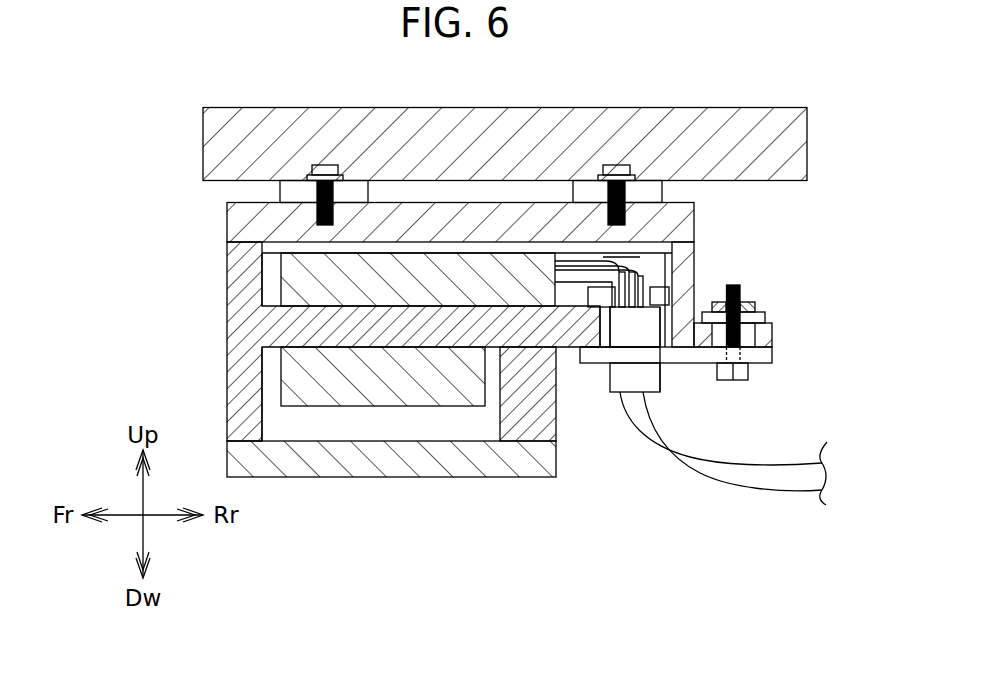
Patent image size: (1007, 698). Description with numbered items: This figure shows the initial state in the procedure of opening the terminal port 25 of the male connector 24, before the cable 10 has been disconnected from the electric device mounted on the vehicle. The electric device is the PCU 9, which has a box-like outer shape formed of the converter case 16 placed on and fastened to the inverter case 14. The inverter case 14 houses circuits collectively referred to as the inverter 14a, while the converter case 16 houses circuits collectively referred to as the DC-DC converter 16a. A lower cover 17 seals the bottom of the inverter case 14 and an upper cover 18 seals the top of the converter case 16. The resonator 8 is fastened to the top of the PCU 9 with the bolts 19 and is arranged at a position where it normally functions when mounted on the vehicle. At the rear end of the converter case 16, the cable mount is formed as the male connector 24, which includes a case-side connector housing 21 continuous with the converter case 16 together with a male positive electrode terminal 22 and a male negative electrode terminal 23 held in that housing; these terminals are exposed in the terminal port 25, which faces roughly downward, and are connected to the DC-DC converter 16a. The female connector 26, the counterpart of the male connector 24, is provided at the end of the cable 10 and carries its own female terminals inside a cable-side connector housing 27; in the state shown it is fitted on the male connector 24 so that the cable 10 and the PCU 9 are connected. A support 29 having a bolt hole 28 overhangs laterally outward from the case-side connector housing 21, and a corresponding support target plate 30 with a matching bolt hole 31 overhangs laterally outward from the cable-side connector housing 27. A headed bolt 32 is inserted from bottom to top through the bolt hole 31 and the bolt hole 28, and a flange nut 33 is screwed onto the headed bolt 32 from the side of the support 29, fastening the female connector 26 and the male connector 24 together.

The resonator 8 is at (203, 147).
The PCU 9 is at (227, 208).
The cable 10 is at (736, 477).
The inverter case 14 is at (229, 386).
The inverter 14a is at (288, 370).
The converter case 16 is at (229, 278).
The DC-DC converter 16a is at (288, 283).
The lower cover 17 is at (508, 477).
The upper cover 18 is at (694, 222).
The bolts 19 is at (330, 165).
The case-side connector housing 21 is at (648, 258).
The male positive electrode terminal 22 is at (652, 264).
The male negative electrode terminal 23 is at (656, 271).
The male connector 24 is at (656, 275).
The terminal port 25 is at (652, 302).
The female connector 26 is at (603, 368).
The cable-side connector housing 27 is at (620, 393).
The bolt hole 28 is at (745, 350).
The support 29 is at (776, 340).
The support target plate 30 is at (775, 356).
The bolt hole 31 is at (766, 318).
The headed bolt 32 is at (735, 373).
The flange nut 33 is at (757, 304).